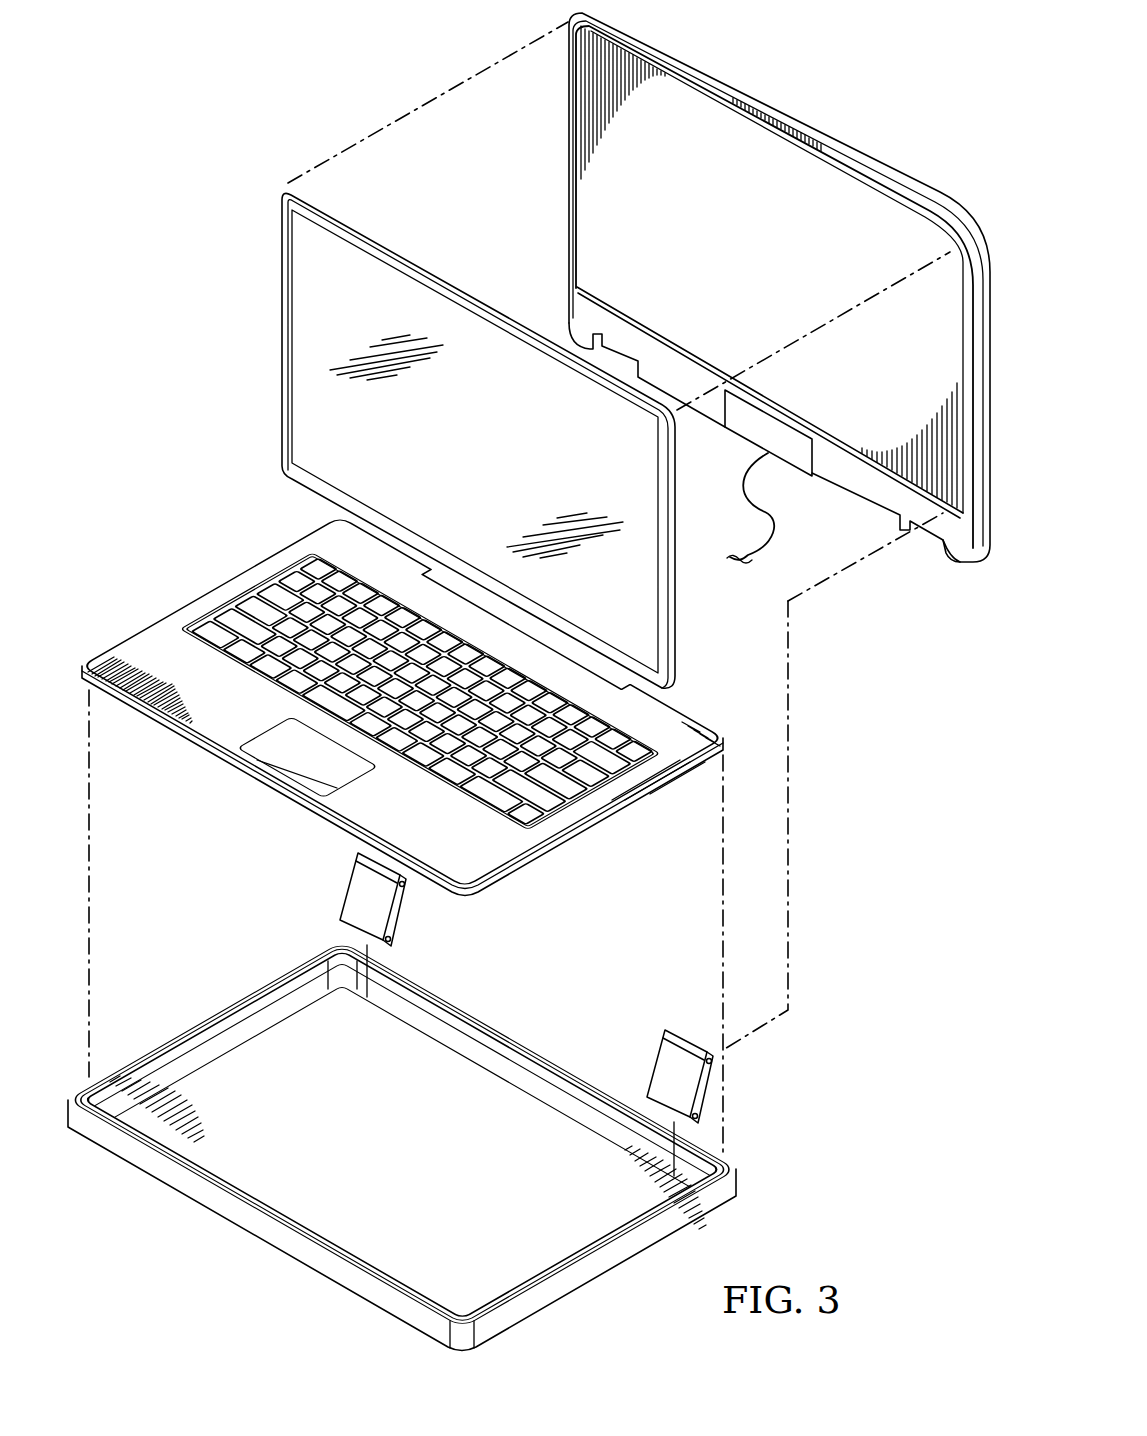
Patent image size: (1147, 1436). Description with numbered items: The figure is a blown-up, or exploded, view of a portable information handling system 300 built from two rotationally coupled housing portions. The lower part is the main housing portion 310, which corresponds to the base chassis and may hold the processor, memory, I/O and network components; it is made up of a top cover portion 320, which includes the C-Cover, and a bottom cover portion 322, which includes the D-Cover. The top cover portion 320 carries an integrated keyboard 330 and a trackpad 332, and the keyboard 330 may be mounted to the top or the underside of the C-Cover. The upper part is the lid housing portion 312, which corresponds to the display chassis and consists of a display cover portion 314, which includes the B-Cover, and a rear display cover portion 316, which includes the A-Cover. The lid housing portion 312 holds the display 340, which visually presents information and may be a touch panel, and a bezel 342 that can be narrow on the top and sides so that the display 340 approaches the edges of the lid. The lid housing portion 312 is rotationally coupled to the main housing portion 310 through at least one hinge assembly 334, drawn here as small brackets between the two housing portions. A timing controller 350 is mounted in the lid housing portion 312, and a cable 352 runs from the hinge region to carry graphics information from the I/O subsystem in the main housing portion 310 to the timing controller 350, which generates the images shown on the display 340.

The portable information handling system 300 is at (203, 132).
The main housing portion 310 is at (121, 577).
The lid housing portion 312 is at (366, 90).
The display cover portion 314 is at (287, 397).
The rear display cover portion 316 is at (781, 116).
The top cover portion 320 is at (177, 733).
The bottom cover portion 322 is at (266, 1253).
The keyboard 330 is at (236, 603).
The trackpad 332 is at (293, 754).
The hinge assembly 334 is at (348, 889).
The display 340 is at (496, 470).
The bezel 342 is at (282, 278).
The timing controller (TCON) 350 is at (790, 442).
The cable 352 is at (775, 522).